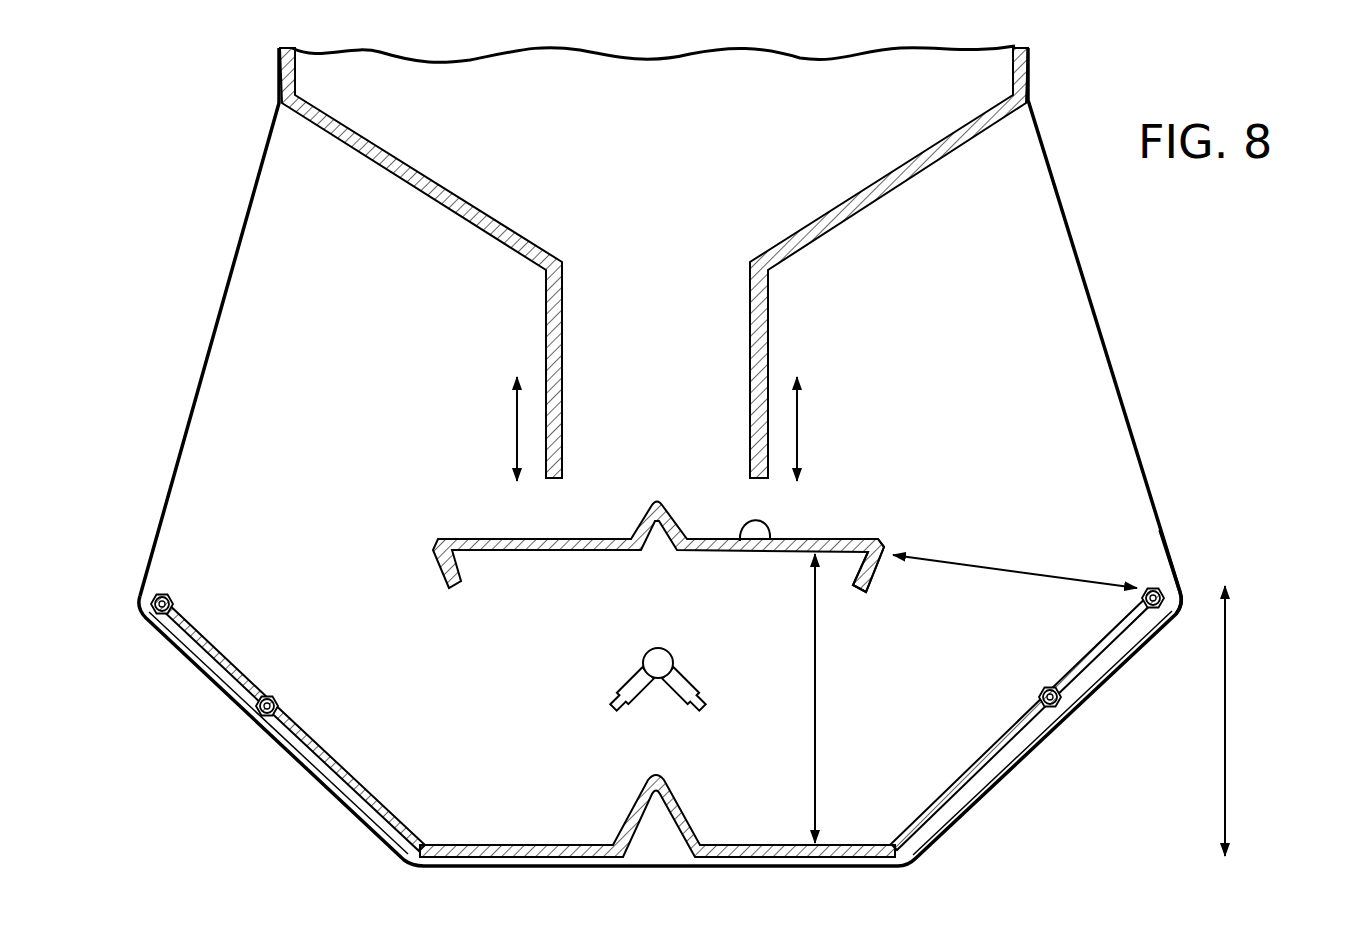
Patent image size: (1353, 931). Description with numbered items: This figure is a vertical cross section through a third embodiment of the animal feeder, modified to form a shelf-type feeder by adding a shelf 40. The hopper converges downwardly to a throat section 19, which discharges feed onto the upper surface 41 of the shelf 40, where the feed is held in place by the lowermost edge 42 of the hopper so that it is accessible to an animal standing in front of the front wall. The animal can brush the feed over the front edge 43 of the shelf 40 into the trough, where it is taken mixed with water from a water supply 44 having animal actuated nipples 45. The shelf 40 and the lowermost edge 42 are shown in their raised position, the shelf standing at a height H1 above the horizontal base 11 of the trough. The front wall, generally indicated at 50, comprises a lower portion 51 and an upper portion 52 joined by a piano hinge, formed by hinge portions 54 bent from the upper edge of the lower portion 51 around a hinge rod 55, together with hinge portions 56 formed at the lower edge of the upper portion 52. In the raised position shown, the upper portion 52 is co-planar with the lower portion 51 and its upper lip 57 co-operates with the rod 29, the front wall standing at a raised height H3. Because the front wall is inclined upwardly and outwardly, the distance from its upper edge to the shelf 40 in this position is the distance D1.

The horizontal base 11 is at (535, 839).
The throat section 19 is at (676, 350).
The rod 29 is at (1182, 588).
The shelf 40 is at (806, 521).
The upper surface 41 is at (740, 542).
The lowermost edge 42 is at (558, 482).
The front edge 43 is at (886, 537).
The water supply 44 is at (645, 649).
The animal actuated nipples 45 is at (707, 697).
The front wall 50 is at (977, 730).
The lower portion 51 is at (365, 774).
The upper portion 52 is at (226, 641).
The hinge portions 54 is at (1077, 710).
The hinge rod 55 is at (1037, 693).
The hinge portions 56 is at (285, 697).
The upper lip 57 is at (1146, 590).
The distance D1 is at (990, 565).
The height H1 is at (818, 690).
The height H3 is at (1228, 735).